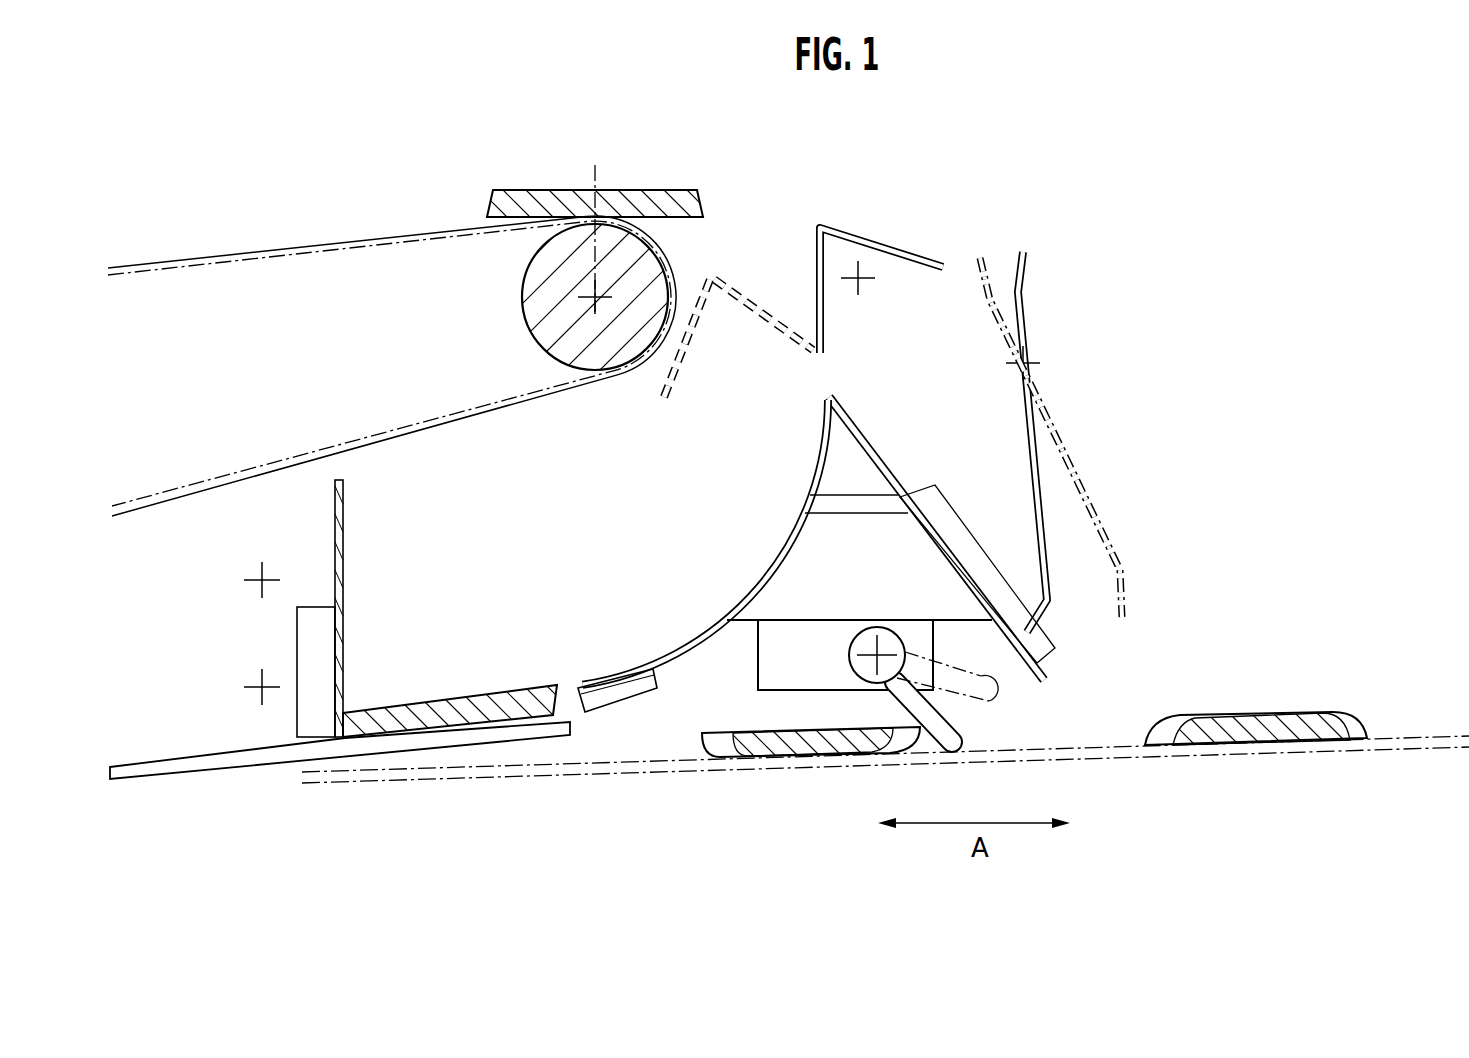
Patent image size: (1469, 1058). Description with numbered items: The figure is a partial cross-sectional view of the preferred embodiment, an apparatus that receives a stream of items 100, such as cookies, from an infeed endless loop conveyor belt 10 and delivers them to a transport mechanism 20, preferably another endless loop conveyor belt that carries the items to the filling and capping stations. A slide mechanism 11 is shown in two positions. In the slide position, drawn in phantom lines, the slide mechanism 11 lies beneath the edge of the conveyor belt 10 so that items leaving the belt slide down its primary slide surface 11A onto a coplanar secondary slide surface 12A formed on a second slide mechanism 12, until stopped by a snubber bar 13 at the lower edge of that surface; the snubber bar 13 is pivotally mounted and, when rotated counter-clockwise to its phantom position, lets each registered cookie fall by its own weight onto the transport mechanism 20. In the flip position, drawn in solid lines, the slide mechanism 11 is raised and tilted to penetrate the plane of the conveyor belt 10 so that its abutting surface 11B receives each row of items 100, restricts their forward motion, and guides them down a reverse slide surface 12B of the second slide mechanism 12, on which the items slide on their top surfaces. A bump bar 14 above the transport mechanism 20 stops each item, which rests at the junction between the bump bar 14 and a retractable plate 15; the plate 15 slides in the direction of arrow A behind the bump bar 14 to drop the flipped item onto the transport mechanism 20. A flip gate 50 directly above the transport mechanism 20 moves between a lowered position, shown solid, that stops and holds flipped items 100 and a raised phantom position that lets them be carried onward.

The conveyor belt 10 is at (373, 244).
The items 100 is at (673, 200).
The slide mechanism 11 is at (920, 257).
The primary slide surface 11A is at (886, 242).
The abutting surface 11B is at (812, 265).
The second slide mechanism 12 is at (816, 554).
The secondary slide surface 12A is at (878, 455).
The reverse slide surface 12B is at (728, 600).
The snubber bar 13 is at (1025, 277).
The bump bar 14 is at (313, 620).
The retractable plate 15 is at (531, 735).
The transport mechanism 20 is at (1398, 748).
The flip gate 50 is at (960, 726).